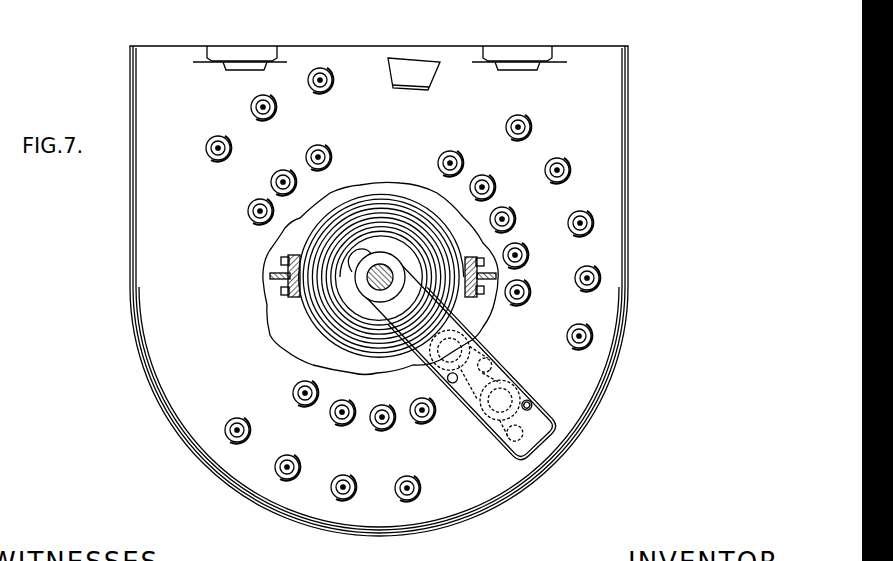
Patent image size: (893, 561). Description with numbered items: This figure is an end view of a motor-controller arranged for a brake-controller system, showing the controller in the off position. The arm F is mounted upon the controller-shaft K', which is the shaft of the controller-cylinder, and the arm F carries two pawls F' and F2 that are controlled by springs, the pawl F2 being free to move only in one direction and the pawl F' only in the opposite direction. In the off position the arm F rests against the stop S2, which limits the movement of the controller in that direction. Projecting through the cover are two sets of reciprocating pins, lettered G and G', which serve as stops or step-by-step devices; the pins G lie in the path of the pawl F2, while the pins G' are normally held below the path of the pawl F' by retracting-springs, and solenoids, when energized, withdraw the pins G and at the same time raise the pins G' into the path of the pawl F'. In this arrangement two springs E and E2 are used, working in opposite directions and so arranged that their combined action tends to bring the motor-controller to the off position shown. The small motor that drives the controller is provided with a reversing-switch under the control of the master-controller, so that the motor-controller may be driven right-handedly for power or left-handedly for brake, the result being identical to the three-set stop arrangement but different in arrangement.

The stop S2 is at (402, 78).
The reciprocating pin G is at (509, 119).
The reciprocating pin G' is at (450, 148).
The spring E is at (465, 252).
The spring E2 is at (283, 288).
The controller-shaft K' is at (331, 311).
The arm F is at (459, 360).
The pawl F' is at (482, 382).
The pawl F2 is at (536, 414).